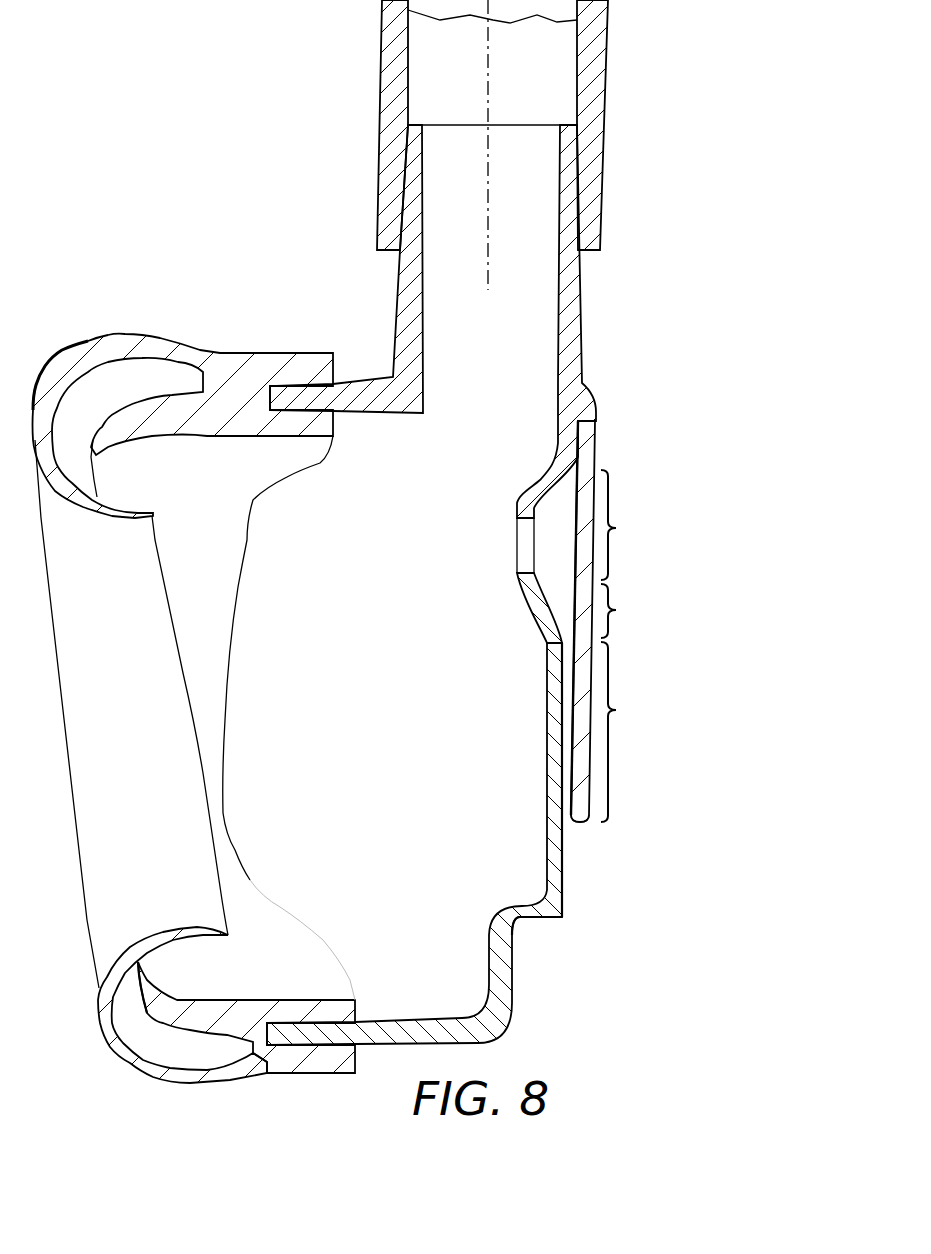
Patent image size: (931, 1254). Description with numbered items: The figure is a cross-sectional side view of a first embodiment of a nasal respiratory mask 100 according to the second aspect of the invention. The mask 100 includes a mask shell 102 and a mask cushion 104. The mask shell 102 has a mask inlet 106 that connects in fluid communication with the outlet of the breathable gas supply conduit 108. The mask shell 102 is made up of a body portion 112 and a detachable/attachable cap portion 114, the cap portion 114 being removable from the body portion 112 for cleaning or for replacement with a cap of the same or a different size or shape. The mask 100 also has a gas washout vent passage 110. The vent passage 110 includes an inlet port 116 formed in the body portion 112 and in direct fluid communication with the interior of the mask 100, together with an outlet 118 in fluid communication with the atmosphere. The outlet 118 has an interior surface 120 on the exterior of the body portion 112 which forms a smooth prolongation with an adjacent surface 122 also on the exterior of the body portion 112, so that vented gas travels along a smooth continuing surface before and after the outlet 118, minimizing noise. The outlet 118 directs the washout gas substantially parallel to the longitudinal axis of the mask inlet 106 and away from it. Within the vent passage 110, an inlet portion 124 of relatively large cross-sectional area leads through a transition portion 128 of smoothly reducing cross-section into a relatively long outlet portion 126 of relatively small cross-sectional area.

The nasal respiratory mask 100 is at (172, 150).
The mask shell 102 is at (590, 370).
The mask cushion 104 is at (112, 345).
The mask inlet 106 is at (568, 272).
The breathable gas supply conduit 108 is at (380, 90).
The gas washout vent passage 110 is at (555, 582).
The body portion 112 is at (553, 690).
The cap portion 114 is at (582, 700).
The inlet port 116 is at (522, 542).
The outlet 118 is at (567, 830).
The interior surface 120 is at (564, 775).
The adjacent surface 122 is at (564, 868).
The inlet portion 124 is at (637, 525).
The outlet portion 126 is at (638, 732).
The transition portion 128 is at (638, 611).